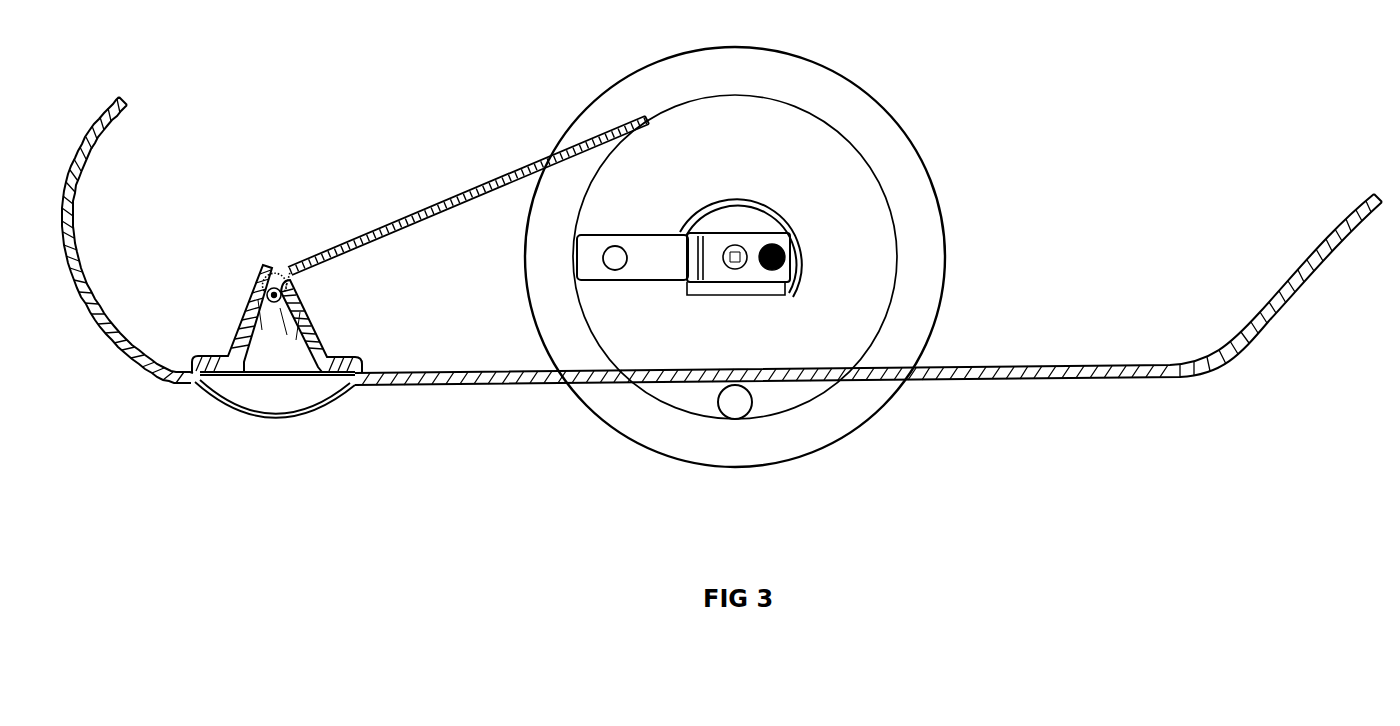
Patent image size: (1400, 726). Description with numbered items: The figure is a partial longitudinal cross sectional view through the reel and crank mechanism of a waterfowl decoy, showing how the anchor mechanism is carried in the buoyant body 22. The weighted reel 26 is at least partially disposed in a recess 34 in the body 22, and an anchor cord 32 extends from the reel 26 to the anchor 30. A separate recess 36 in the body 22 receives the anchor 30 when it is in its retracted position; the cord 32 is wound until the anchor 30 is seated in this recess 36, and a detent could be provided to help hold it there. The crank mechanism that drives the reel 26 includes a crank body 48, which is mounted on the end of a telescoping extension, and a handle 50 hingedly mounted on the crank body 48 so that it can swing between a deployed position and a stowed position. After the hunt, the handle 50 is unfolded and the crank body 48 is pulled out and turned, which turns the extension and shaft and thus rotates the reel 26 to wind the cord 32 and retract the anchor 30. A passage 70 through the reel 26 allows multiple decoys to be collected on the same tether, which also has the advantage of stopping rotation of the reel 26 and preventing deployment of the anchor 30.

The buoyant body 22 is at (1085, 393).
The weighted reel 26 is at (912, 202).
The anchor 30 is at (293, 403).
The anchor cord 32 is at (412, 218).
The recess 34 is at (545, 363).
The recess 36 is at (250, 375).
The crank body 48 is at (741, 194).
The handle 50 is at (660, 267).
The passage 70 is at (757, 408).